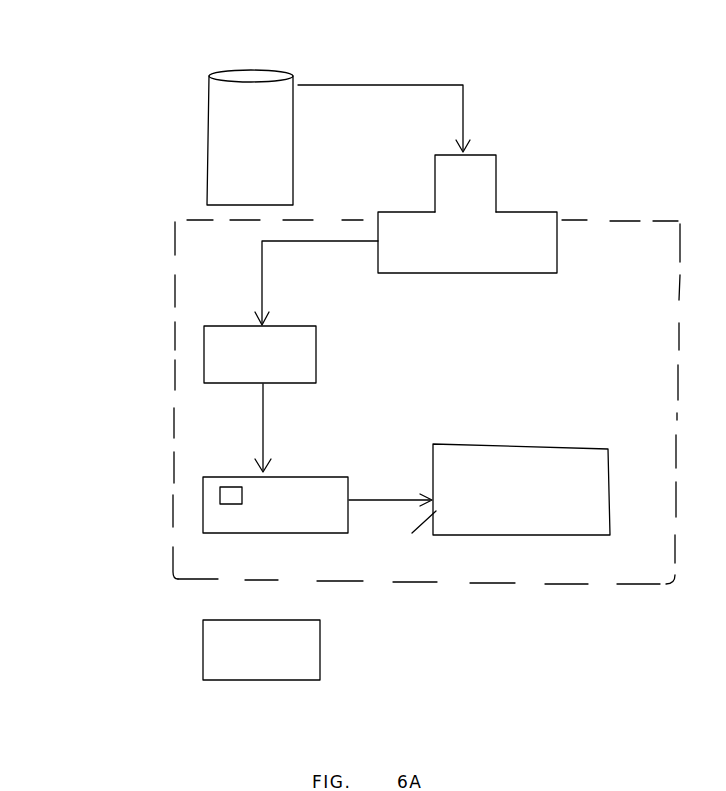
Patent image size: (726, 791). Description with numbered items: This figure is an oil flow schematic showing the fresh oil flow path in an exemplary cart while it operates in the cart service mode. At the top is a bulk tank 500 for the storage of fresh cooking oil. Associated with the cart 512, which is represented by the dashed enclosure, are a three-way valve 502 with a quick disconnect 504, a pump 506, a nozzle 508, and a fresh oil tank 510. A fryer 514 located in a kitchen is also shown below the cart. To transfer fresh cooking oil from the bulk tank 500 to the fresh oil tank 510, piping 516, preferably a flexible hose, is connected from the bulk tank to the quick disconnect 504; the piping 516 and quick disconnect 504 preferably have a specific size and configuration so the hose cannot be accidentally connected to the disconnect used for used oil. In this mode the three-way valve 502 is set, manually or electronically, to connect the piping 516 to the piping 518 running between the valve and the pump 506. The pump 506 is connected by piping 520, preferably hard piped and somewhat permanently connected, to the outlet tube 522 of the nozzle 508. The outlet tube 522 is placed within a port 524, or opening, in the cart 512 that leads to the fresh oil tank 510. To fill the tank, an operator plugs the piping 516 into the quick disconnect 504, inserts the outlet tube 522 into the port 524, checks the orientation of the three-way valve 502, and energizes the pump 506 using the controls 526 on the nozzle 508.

The bulk tank 500 is at (260, 66).
The three-way valve 502 is at (557, 240).
The quick disconnect 504 is at (497, 157).
The pump 506 is at (316, 362).
The nozzle 508 is at (328, 523).
The fresh oil tank 510 is at (580, 528).
The cart 512 is at (681, 292).
The fryer 514 is at (320, 654).
The piping 516 is at (408, 83).
The piping 518 is at (293, 243).
The piping 520 is at (267, 432).
The outlet tube 522 is at (379, 500).
The port 524 is at (417, 541).
The controls 526 is at (220, 496).